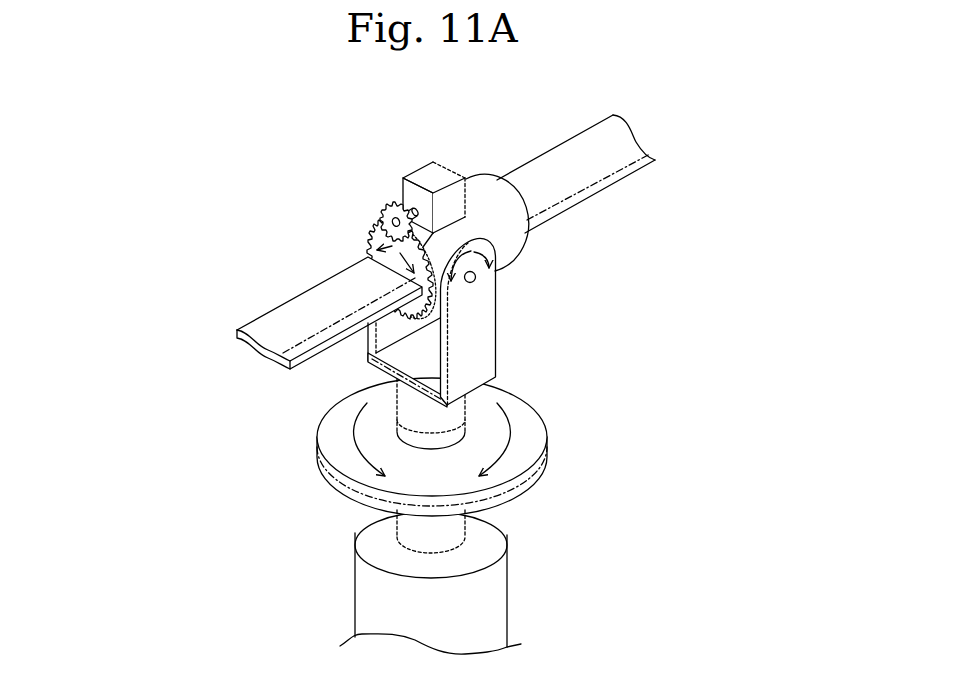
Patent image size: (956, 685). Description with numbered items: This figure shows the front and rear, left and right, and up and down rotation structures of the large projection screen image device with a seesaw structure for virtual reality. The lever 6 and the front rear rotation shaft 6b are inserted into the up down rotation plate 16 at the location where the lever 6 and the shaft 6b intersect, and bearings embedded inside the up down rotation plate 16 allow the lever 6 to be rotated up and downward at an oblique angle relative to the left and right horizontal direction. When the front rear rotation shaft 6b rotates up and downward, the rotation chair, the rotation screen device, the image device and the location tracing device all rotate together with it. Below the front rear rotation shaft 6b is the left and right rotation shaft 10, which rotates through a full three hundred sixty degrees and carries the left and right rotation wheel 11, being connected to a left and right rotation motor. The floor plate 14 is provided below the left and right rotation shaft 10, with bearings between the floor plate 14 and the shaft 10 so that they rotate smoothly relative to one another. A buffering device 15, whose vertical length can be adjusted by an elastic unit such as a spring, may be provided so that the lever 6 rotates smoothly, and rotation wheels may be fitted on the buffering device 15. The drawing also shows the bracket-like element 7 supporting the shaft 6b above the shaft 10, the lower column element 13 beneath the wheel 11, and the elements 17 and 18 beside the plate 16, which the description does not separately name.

The lever 6 is at (290, 316).
The front rear rotation shaft 6b is at (477, 278).
The bracket 7 is at (483, 339).
The left and right rotation shaft 10 is at (450, 410).
The left and right rotation wheel 11 is at (337, 432).
The support column 13 is at (373, 590).
The floor plate 14 is at (434, 294).
The buffering device 15 is at (366, 249).
The up down rotation plate 16 is at (482, 182).
The pinion gear 17 is at (385, 210).
The motor 18 is at (422, 176).